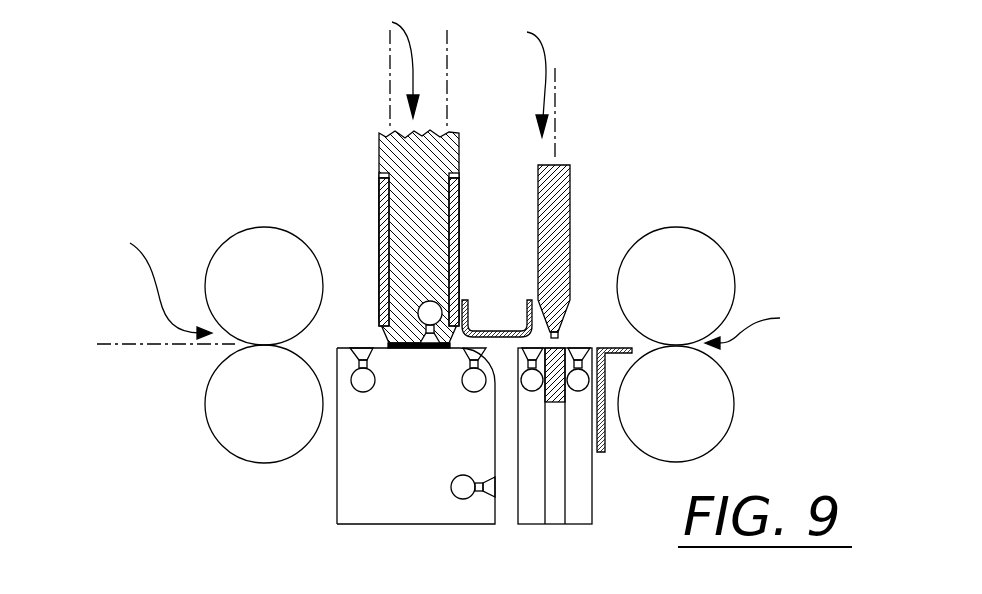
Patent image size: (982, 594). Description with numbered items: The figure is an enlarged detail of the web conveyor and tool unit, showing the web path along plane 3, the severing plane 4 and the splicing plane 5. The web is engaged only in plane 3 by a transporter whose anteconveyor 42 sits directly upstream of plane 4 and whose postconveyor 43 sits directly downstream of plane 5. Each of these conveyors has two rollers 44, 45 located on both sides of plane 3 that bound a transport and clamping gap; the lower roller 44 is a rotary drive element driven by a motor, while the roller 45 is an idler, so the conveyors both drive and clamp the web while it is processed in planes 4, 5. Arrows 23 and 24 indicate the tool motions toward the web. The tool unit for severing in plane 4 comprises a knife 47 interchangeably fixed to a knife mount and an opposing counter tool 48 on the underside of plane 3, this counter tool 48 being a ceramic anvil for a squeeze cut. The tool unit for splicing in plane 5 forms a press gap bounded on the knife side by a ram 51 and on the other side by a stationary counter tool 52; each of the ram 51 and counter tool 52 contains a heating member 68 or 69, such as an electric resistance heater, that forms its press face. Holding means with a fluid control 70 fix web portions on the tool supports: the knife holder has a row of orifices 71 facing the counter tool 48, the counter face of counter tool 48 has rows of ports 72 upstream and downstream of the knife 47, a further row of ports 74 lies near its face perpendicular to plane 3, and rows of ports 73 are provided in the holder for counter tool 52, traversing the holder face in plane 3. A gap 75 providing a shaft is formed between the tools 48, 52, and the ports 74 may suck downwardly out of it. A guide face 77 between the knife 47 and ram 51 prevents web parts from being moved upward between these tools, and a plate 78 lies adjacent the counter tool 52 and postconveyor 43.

The plane 3 is at (157, 345).
The plane 4 is at (447, 97).
The plane 5 is at (557, 97).
The first direction of movement 23 is at (389, 69).
The second direction of movement 24 is at (522, 77).
The anteconveyor 42 is at (154, 284).
The postconveyor 43 is at (768, 327).
The lower roller 44 is at (220, 420).
The roller 45 is at (272, 240).
The knife 47 is at (458, 203).
The counter tool 48 is at (338, 497).
The ram 51 is at (563, 208).
The counter tool 52 is at (558, 405).
The heating member 68 is at (548, 330).
The heating member 69 is at (553, 347).
The fluid control 70 is at (389, 410).
The orifices 71 is at (431, 346).
The ports 72 is at (367, 347).
The ports 73 is at (676, 404).
The ports 74 is at (495, 487).
The gap 75 is at (503, 437).
The guide face 77 is at (493, 328).
The guide plate 78 is at (617, 347).